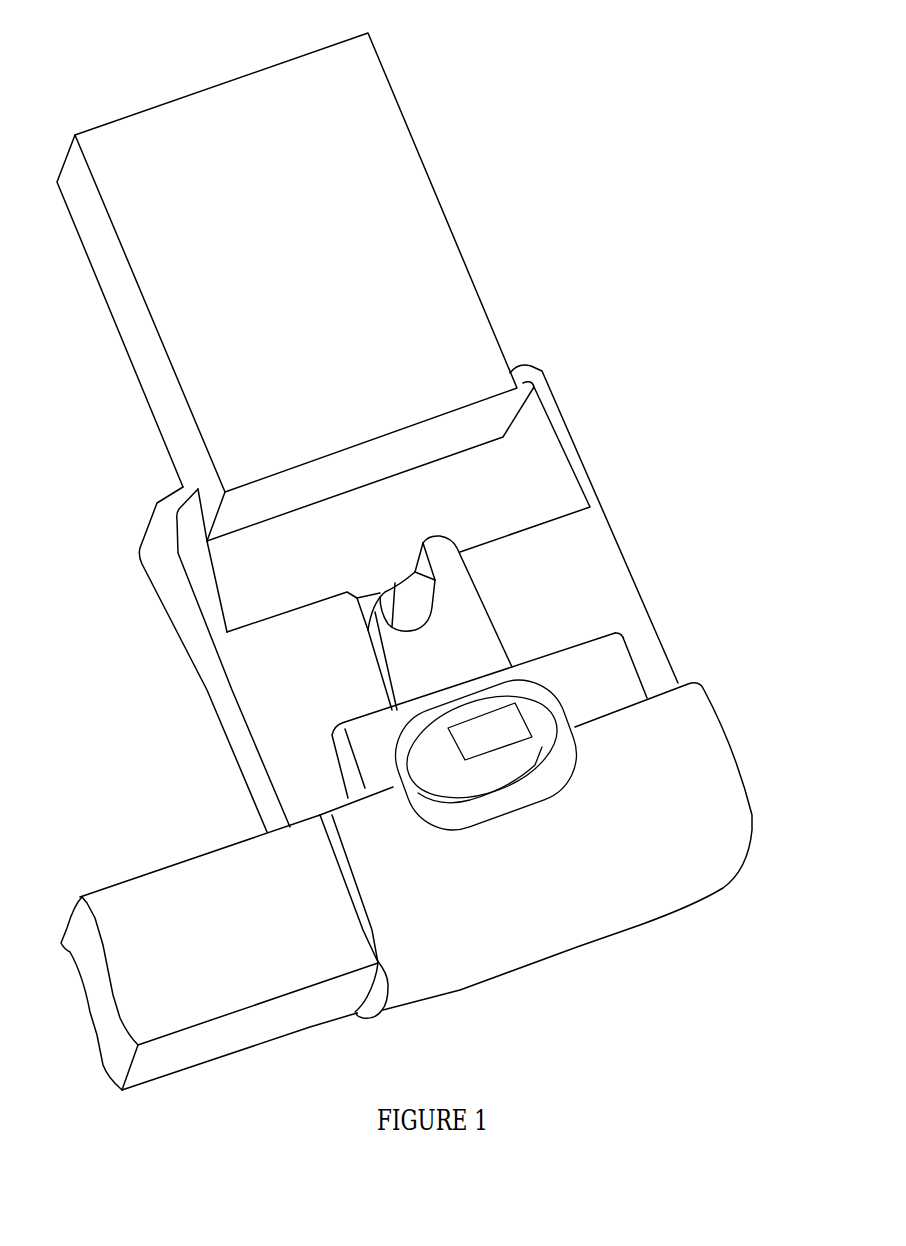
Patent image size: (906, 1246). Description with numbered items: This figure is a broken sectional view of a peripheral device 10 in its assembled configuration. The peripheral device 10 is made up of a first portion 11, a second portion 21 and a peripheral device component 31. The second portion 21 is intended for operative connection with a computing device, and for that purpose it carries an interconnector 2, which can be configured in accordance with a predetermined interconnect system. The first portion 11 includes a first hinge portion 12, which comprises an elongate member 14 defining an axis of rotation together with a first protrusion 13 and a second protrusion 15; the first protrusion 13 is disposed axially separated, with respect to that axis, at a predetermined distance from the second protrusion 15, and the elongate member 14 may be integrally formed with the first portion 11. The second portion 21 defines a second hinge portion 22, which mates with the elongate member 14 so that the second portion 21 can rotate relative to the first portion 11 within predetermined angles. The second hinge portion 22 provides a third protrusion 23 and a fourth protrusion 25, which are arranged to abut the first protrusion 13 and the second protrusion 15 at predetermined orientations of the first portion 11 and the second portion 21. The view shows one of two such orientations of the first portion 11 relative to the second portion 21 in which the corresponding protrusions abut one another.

The interconnector 2 is at (408, 205).
The peripheral device 10 is at (742, 201).
The first portion 11 is at (691, 939).
The first hinge portion 12 is at (472, 653).
The first protrusion 13 is at (413, 563).
The elongate member 14 is at (407, 665).
The second protrusion 15 is at (442, 790).
The second portion 21 is at (605, 447).
The second hinge portion 22 is at (357, 620).
The third protrusion 23 is at (415, 573).
The fourth protrusion 25 is at (495, 737).
The peripheral device component 31 is at (138, 871).